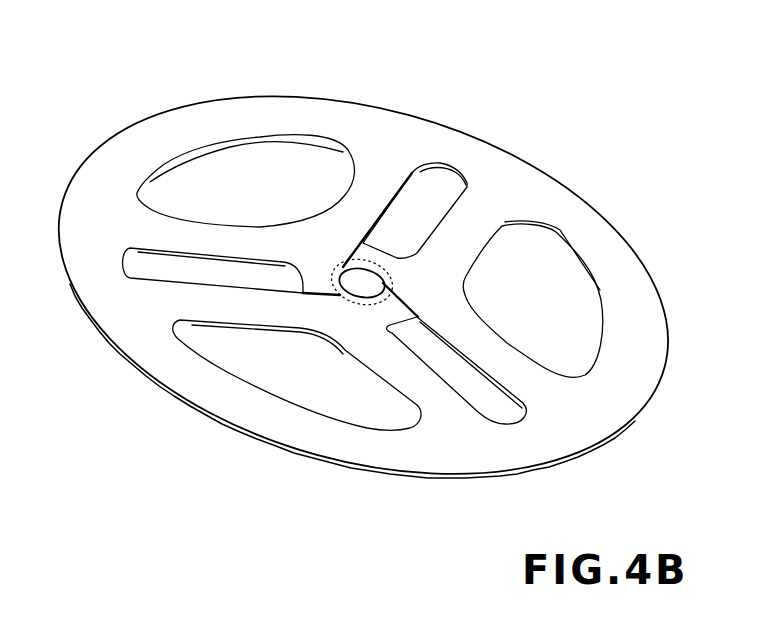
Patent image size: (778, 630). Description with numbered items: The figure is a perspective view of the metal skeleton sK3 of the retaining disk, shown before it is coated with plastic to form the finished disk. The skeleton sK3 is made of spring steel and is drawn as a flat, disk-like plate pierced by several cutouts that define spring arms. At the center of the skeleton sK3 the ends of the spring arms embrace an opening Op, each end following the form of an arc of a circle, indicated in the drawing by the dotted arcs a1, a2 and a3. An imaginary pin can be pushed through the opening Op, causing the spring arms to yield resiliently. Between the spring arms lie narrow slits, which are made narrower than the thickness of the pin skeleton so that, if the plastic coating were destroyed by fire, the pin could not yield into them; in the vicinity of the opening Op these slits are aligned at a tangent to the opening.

The metal skeleton of the retaining disk sK3 is at (160, 107).
The opening Op is at (360, 310).
The arc of a circle a1 is at (330, 277).
The arc of a circle a2 is at (370, 310).
The arc of a circle a3 is at (377, 262).